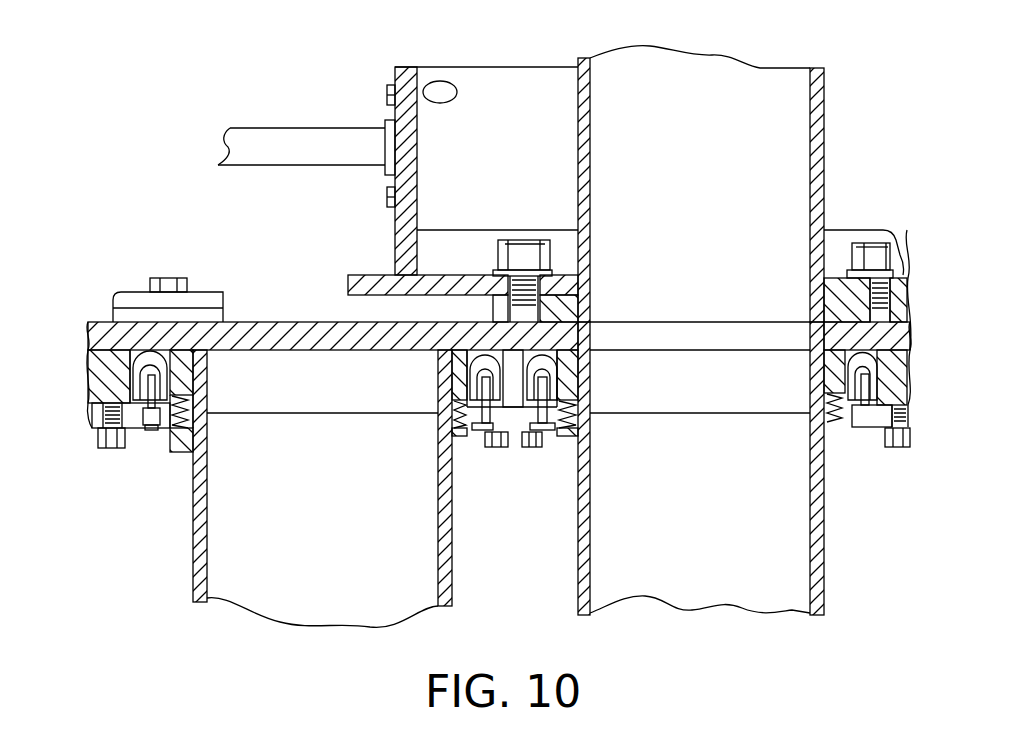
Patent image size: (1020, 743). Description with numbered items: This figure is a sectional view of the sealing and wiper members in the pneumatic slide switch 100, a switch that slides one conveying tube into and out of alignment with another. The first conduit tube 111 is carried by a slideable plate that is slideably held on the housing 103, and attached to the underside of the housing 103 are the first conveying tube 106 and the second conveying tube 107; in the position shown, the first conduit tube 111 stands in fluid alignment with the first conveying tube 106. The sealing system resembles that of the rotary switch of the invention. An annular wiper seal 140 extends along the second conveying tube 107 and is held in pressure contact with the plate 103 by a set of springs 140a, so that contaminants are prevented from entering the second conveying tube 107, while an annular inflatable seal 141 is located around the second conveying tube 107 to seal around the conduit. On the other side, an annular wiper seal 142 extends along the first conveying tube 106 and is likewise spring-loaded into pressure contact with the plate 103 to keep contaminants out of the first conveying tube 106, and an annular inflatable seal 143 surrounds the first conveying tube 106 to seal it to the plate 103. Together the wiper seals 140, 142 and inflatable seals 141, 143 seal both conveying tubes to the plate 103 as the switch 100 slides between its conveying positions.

The pneumatic slide switch 100 is at (133, 187).
The housing 103 is at (113, 338).
The first conveying tube 106 is at (770, 603).
The second conveying tube 107 is at (192, 585).
The first conduit tube 111 is at (824, 97).
The annular wiper seal 140 is at (185, 434).
The springs 140a is at (165, 428).
The annular inflatable seal 141 is at (150, 427).
The annular wiper seal 142 is at (570, 434).
The annular inflatable seal 143 is at (523, 430).